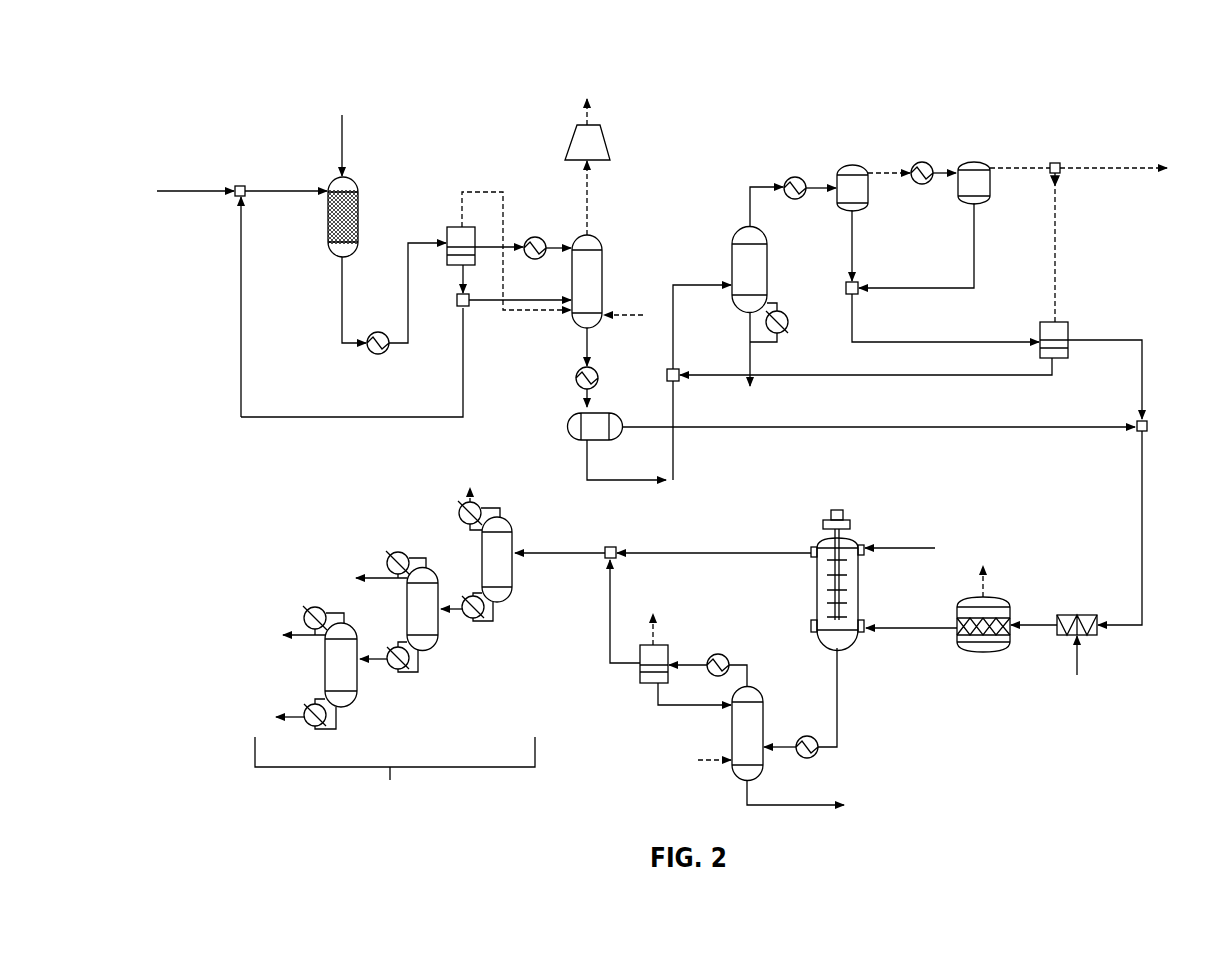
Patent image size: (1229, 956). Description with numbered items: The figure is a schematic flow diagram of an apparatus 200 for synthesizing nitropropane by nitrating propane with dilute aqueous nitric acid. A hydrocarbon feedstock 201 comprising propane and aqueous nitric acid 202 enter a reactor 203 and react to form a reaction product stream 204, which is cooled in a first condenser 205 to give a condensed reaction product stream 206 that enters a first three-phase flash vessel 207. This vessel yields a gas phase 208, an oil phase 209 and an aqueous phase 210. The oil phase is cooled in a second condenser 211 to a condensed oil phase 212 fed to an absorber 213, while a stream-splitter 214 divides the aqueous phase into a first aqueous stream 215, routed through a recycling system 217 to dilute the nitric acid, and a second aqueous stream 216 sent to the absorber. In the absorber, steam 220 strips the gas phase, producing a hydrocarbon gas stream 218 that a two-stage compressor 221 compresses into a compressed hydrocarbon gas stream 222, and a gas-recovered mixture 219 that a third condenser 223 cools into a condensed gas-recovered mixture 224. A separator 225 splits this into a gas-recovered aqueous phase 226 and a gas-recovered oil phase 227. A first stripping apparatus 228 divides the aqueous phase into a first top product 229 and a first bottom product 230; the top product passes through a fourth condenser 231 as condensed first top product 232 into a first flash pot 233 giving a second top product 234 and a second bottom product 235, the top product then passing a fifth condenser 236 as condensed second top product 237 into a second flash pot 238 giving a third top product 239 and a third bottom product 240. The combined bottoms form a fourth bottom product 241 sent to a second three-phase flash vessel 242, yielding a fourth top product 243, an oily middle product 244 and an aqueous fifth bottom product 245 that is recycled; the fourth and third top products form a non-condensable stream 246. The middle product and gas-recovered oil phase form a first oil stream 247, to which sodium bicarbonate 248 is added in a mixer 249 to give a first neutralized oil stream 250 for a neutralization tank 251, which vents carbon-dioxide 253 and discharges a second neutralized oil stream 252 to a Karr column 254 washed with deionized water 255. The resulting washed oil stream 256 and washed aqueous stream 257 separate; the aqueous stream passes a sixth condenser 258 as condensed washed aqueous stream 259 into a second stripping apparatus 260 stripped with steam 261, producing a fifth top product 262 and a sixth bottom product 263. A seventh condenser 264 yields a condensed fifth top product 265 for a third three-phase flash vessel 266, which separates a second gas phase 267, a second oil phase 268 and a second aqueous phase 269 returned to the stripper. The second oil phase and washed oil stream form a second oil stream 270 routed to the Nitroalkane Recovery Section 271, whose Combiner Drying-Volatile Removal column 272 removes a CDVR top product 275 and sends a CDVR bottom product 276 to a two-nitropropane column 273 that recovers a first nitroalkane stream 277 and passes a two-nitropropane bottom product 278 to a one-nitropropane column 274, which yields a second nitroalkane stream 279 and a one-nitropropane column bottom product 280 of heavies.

The apparatus 200 is at (212, 72).
The hydrocarbon feedstock 201 is at (343, 140).
The aqueous nitric acid 202 is at (297, 190).
The reactor 203 is at (358, 190).
The reaction product stream 204 is at (340, 305).
The first condenser 205 is at (375, 355).
The condensed reaction product stream 206 is at (393, 345).
The first three-phase flash vessel 207 is at (447, 228).
The gas phase 208 is at (492, 191).
The oil phase 209 is at (488, 246).
The aqueous phase 210 is at (462, 276).
The second condenser 211 is at (530, 237).
The condensed oil phase 212 is at (555, 245).
The absorber 213 is at (603, 278).
The stream-splitter 214 is at (456, 300).
The first aqueous stream 215 is at (465, 365).
The second aqueous stream 216 is at (505, 302).
The recycling system 217 is at (239, 196).
The hydrocarbon gas stream 218 is at (588, 185).
The gas-recovered mixture 219 is at (587, 355).
The steam 220 is at (618, 315).
The two-stage compressor 221 is at (608, 142).
The compressed hydrocarbon gas stream 222 is at (591, 100).
The third condenser 223 is at (598, 376).
The condensed gas-recovered mixture 224 is at (592, 406).
The separator 225 is at (566, 423).
The gas-recovered aqueous phase 226 is at (585, 445).
The gas-recovered oil phase 227 is at (640, 426).
The first stripping apparatus 228 is at (768, 237).
The first top product 229 is at (748, 205).
The first bottom product 230 is at (752, 350).
The fourth condenser 231 is at (798, 178).
The condensed first top product 232 is at (817, 186).
The first flash pot 233 is at (852, 163).
The second top product 234 is at (890, 172).
The second bottom product 235 is at (853, 250).
The fifth condenser 236 is at (927, 162).
The condensed second top product 237 is at (970, 162).
The second flash pot 238 is at (1007, 165).
The third top product 239 is at (1010, 168).
The third bottom product 240 is at (975, 255).
The fourth bottom product 241 is at (900, 341).
The second three-phase flash vessel 242 is at (1062, 322).
The fourth top product 243 is at (1058, 250).
The middle product 244 is at (1112, 340).
The fifth bottom product 245 is at (1005, 377).
The non-condensable stream 246 is at (1097, 167).
The first oil stream 247 is at (1143, 520).
The sodium bicarbonate 248 is at (1078, 655).
The mixer 249 is at (1072, 614).
The first neutralized oil stream 250 is at (1032, 624).
The neutralization tank 251 is at (1000, 595).
The second neutralized oil stream 252 is at (915, 627).
The carbon-dioxide 253 is at (980, 585).
The Karr column 254 is at (850, 605).
The deionized water 255 is at (890, 547).
The washed oil stream 256 is at (690, 552).
The washed aqueous stream 257 is at (838, 690).
The sixth condenser 258 is at (815, 736).
The condensed washed aqueous stream 259 is at (780, 752).
The second stripping apparatus 260 is at (757, 688).
The steam 261 is at (712, 765).
The fifth top product 262 is at (748, 663).
The sixth bottom product 263 is at (836, 800).
The seventh condenser 264 is at (722, 653).
The condensed fifth top product 265 is at (693, 664).
The third three-phase flash vessel 266 is at (640, 677).
The second gas phase 267 is at (652, 633).
The second oil phase 268 is at (609, 628).
The second aqueous phase 269 is at (700, 706).
The second oil stream 270 is at (580, 552).
The Nitroalkane Recovery Section 271 is at (395, 777).
The Combiner Drying-Volatile Removal column 272 is at (513, 540).
The 2-nitropropane column 273 is at (430, 568).
The 1-nitropropane column 274 is at (372, 620).
The CDVR top product 275 is at (472, 490).
The CDVR bottom product 276 is at (457, 617).
The first nitroalkane stream 277 is at (375, 577).
The 2-nitropropane bottom product 278 is at (387, 668).
The second nitroalkane stream 279 is at (300, 634).
The 1-nitropropane column bottom product 280 is at (290, 716).